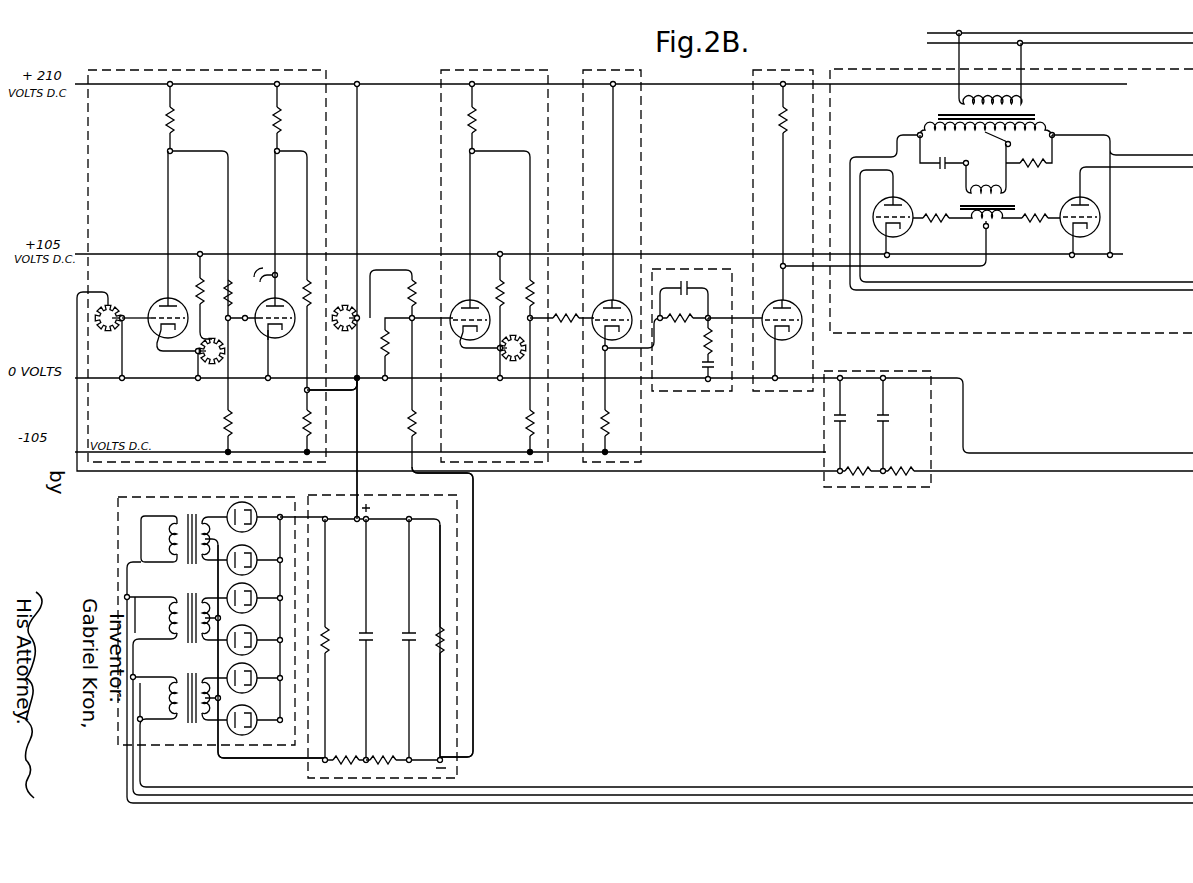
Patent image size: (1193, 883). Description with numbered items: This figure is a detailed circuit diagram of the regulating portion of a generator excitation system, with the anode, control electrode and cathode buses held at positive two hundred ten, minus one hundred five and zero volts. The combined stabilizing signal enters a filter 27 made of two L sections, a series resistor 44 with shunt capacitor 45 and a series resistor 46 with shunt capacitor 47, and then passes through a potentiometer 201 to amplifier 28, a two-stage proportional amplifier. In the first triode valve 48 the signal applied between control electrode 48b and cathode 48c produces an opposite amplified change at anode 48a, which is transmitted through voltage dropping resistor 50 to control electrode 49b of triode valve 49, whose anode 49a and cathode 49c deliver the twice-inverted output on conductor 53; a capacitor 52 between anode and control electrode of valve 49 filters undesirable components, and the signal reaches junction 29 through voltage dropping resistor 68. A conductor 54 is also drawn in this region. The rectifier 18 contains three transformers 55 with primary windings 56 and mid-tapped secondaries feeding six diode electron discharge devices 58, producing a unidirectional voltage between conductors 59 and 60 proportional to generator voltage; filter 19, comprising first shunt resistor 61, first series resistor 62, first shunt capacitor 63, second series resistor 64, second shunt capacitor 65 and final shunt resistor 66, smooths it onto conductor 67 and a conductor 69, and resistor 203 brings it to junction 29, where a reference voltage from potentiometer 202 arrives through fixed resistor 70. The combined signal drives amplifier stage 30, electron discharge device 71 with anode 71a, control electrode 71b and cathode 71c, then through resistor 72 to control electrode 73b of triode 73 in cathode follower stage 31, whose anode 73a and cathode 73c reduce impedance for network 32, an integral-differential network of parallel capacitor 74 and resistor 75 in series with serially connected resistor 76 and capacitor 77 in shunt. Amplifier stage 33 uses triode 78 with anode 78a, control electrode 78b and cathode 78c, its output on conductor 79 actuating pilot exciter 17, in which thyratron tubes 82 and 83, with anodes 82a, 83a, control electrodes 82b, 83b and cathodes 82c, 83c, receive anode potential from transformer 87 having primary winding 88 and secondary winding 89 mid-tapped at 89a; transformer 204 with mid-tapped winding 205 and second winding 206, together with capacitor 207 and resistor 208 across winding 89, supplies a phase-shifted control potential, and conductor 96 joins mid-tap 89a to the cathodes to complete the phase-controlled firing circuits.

The pilot exciter 17 is at (855, 66).
The rectifier 18 is at (152, 497).
The filter 19 is at (345, 497).
The filter 27 is at (876, 371).
The amplifier 28 is at (322, 70).
The junction 29 is at (416, 318).
The amplifier stage 30 is at (474, 70).
The cathode follower stage 31 is at (602, 70).
The phase angle advancing and retarding network 32 is at (700, 391).
The amplifier stage 33 is at (778, 70).
The series resistor 44 is at (904, 478).
The shunt capacitor 45 is at (892, 418).
The series resistor 46 is at (860, 478).
The shunt capacitor 47 is at (848, 418).
The triode valve 48 is at (173, 259).
The anode 48a is at (163, 304).
The control electrode 48b is at (158, 328).
The cathode 48c is at (162, 349).
The triode valve 49 is at (272, 253).
The anode 49a is at (280, 303).
The control electrode 49b is at (260, 326).
The cathode 49c is at (278, 334).
The voltage dropping resistor 50 is at (209, 283).
The capacitor 52 is at (262, 270).
The conductor 53 is at (364, 390).
The conductor 54 is at (334, 452).
The transformer 55 is at (192, 590).
The primary winding 56 is at (172, 538).
The diode electron discharge device 58 is at (253, 552).
The conductor 59 is at (303, 517).
The conductor 60 is at (284, 763).
The first shunt resistor 61 is at (330, 632).
The first series resistor 62 is at (340, 760).
The first shunt capacitor 63 is at (372, 632).
The second series resistor 64 is at (382, 760).
The second shunt capacitor 65 is at (412, 632).
The final shunt resistor 66 is at (436, 650).
The conductor 67 is at (476, 488).
The voltage dropping resistor 68 is at (360, 320).
The conductor 69 is at (360, 489).
The fixed resistor 70 is at (410, 290).
The electron discharge device 71 is at (484, 324).
The anode 71a is at (476, 304).
The control electrode 71b is at (462, 336).
The cathode 71c is at (492, 350).
The resistor 72 is at (566, 324).
The triode 73 is at (614, 322).
The anode 73a is at (608, 305).
The control electrode 73b is at (618, 304).
The cathode 73c is at (616, 338).
The capacitor 74 is at (694, 286).
The resistor 75 is at (682, 323).
The resistor 76 is at (702, 344).
The capacitor 77 is at (703, 366).
The triode electron discharge device 78 is at (761, 320).
The anode 78a is at (788, 305).
The control electrode 78b is at (768, 306).
The cathode 78c is at (786, 334).
The conductor 79 is at (988, 262).
The gas filled electron discharge device 82 is at (1026, 226).
The anode 82a is at (884, 203).
The control electrode 82b is at (880, 226).
The cathode 82c is at (898, 232).
The gas filled electron discharge device 83 is at (1119, 212).
The anode 83a is at (1071, 203).
The control electrode 83b is at (1068, 226).
The cathode 83c is at (1082, 233).
The transformer 87 is at (1036, 118).
The primary winding 88 is at (1019, 104).
The secondary winding 89 is at (930, 128).
The mid-tap 89a is at (992, 140).
The conductor 96 is at (1104, 142).
The potentiometer 201 is at (112, 305).
The potentiometer 202 is at (345, 305).
The resistor 203 is at (410, 422).
The transformer 204 is at (998, 200).
The mid-tapped winding 205 is at (980, 224).
The second winding 206 is at (985, 168).
The capacitor 207 is at (943, 170).
The resistor 208 is at (1034, 168).